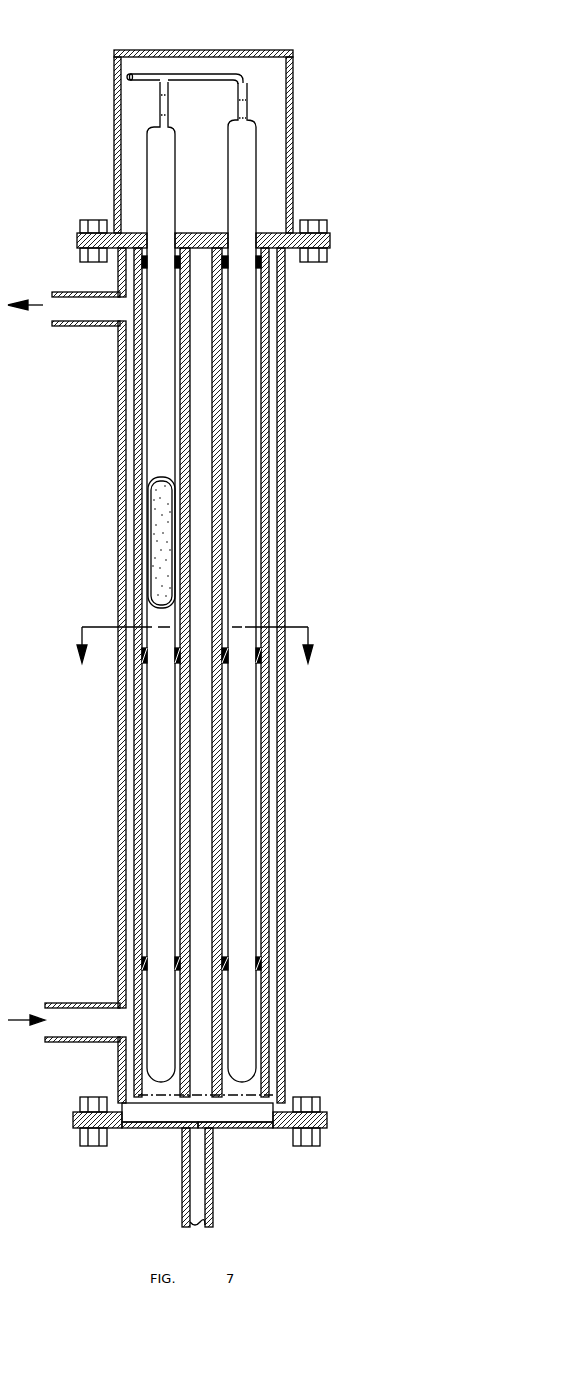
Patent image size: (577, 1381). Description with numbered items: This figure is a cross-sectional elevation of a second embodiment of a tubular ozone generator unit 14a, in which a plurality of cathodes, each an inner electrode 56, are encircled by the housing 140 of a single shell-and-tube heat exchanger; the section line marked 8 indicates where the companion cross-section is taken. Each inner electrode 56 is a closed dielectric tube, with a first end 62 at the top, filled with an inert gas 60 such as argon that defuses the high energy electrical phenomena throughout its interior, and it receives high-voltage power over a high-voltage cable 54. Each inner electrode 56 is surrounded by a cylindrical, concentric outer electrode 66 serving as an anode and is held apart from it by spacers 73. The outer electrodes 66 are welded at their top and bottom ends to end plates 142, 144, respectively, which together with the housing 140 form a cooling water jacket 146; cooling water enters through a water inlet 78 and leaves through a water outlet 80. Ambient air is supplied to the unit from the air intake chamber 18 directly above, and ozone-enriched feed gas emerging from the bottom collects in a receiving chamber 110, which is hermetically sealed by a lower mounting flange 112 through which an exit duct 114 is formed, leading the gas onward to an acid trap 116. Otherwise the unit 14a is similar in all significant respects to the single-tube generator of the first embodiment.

The air intake chamber 18 is at (273, 73).
The high-voltage cable 54 is at (196, 72).
The first end 62 is at (238, 150).
The inner electrode 56 is at (257, 582).
The gas 60 is at (165, 545).
The outer electrode 66 is at (188, 352).
The spacers 73 is at (257, 680).
The cooling water jacket 146 is at (182, 895).
The tubular ozone generator unit 14a is at (150, 675).
The housing 140 is at (118, 556).
The water outlet 80 is at (85, 293).
The water inlet 78 is at (65, 1042).
The end plate 142 is at (219, 260).
The end plate 144 is at (255, 1098).
The receiving chamber 110 is at (160, 1140).
The lower mounting flange 112 is at (275, 1150).
The exit duct 114 is at (197, 1187).
The acid trap 116 is at (0, 496).
The section line 8- 8 is at (194, 634).